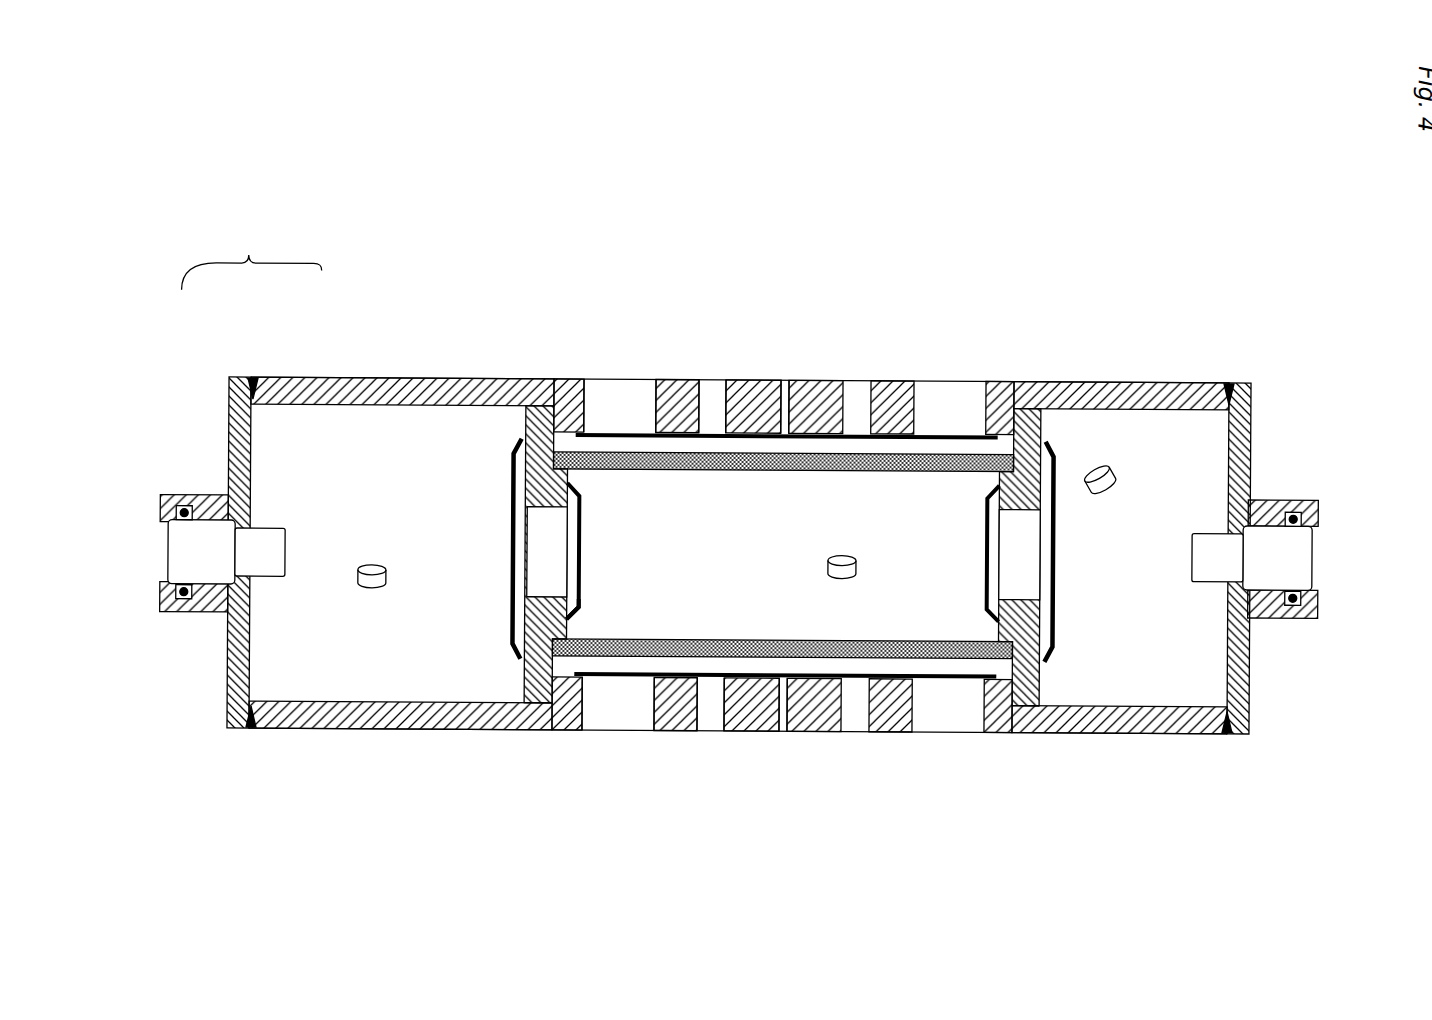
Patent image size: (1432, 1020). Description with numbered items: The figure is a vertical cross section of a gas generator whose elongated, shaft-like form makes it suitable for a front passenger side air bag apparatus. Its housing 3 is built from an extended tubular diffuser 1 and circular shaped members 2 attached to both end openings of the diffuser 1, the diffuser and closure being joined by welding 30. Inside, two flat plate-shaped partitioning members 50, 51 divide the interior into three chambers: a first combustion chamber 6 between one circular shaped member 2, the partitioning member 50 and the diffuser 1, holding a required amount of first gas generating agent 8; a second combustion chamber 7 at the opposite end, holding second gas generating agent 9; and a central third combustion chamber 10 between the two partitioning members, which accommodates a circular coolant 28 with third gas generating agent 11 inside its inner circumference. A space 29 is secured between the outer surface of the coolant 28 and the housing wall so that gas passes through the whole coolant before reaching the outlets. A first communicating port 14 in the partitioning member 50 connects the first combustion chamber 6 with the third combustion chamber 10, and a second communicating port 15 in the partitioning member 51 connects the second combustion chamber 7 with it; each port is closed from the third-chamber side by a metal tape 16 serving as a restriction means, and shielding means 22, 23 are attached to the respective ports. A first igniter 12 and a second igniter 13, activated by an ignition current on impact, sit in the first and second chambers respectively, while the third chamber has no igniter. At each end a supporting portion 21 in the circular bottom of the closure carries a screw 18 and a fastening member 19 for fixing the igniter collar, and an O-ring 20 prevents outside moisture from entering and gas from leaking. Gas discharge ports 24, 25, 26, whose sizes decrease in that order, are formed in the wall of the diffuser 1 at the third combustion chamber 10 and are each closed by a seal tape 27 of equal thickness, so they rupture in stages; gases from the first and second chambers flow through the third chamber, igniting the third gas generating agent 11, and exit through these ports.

The diffuser 1 is at (272, 384).
The circular shaped member 2 is at (222, 388).
The housing 3 is at (252, 253).
The first combustion chamber 6 is at (427, 594).
The second combustion chamber 7 is at (1180, 656).
The first gas generating agent 8 is at (368, 566).
The second gas generating agent 9 is at (1098, 468).
The third combustion chamber 10 is at (703, 529).
The third gas generating agent 11 is at (838, 558).
The first igniter 12 is at (274, 574).
The second igniter 13 is at (1212, 538).
The first communicating port 14 is at (540, 564).
The second communicating port 15 is at (1028, 577).
The metal tape 16 is at (571, 532).
The screw 18 is at (1265, 500).
The fastening member 19 is at (1320, 600).
The O-ring 20 is at (180, 613).
The supporting portion 21 is at (208, 613).
The shielding means 22 is at (583, 594).
The shielding means 23 is at (512, 470).
The gas discharge port 24 is at (627, 393).
The gas discharge port 25 is at (713, 393).
The gas discharge port 26 is at (783, 393).
The seal tape 27 is at (893, 680).
The coolant 28 is at (997, 440).
The space 29 is at (1000, 682).
The welding 30 is at (1228, 385).
The partitioning member 50 is at (535, 705).
The partitioning member 51 is at (1038, 700).